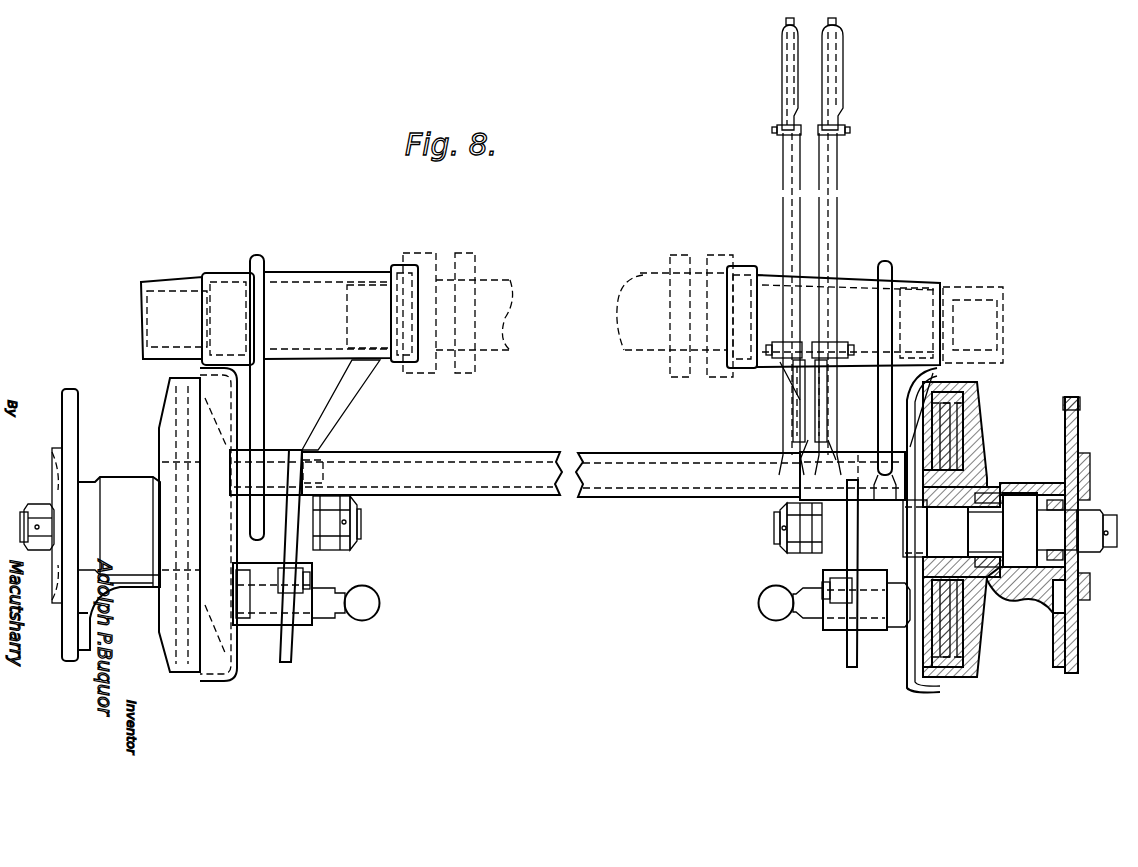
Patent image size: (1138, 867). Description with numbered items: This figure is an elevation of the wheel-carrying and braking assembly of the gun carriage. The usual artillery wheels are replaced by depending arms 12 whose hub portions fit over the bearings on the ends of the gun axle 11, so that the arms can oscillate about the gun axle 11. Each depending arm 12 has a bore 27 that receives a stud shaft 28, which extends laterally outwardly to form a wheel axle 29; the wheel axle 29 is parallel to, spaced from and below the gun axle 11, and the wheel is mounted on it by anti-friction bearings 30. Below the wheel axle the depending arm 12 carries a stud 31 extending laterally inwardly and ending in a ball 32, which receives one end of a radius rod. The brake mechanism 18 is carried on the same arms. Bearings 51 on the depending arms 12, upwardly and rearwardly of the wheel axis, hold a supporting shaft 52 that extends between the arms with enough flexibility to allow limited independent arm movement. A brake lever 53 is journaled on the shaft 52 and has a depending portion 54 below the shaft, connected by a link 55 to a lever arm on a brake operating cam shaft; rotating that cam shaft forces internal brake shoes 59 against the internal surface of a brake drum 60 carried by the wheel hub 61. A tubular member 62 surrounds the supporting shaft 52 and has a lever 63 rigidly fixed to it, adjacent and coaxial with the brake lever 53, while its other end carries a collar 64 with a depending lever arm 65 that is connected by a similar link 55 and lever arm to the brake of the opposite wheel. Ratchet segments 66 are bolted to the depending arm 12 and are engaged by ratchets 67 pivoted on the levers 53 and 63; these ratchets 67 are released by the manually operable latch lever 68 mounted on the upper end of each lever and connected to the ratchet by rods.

The gun axle 11 is at (643, 282).
The depending arms 12 is at (306, 278).
The brake mechanism 18 is at (627, 478).
The bores 27 is at (924, 555).
The stud shafts 28 is at (965, 532).
The wheel axles 29 is at (1028, 525).
The anti-friction bearings 30 is at (1053, 572).
The studs 31 is at (322, 620).
The balls 32 is at (367, 610).
The bearings 51 is at (870, 500).
The supporting shaft 52 is at (560, 497).
The brake lever 53 is at (840, 216).
The depending portion 54 is at (830, 550).
The link 55 is at (852, 667).
The internal brake shoes 59 is at (938, 680).
The brake drum 60 is at (196, 662).
The wheel hub 61 is at (1006, 520).
The tubular member 62 is at (508, 496).
The lever 63 is at (783, 210).
The collar 64 is at (298, 554).
The lever arm 65 is at (287, 662).
The ratchet segments 66 is at (816, 400).
The ratchets 67 is at (796, 342).
The latch lever 68 is at (794, 92).